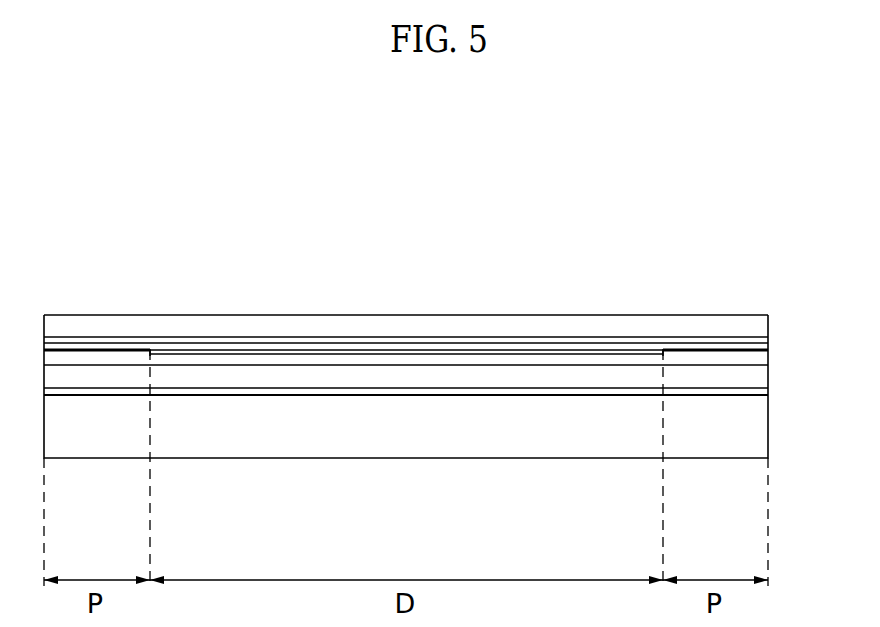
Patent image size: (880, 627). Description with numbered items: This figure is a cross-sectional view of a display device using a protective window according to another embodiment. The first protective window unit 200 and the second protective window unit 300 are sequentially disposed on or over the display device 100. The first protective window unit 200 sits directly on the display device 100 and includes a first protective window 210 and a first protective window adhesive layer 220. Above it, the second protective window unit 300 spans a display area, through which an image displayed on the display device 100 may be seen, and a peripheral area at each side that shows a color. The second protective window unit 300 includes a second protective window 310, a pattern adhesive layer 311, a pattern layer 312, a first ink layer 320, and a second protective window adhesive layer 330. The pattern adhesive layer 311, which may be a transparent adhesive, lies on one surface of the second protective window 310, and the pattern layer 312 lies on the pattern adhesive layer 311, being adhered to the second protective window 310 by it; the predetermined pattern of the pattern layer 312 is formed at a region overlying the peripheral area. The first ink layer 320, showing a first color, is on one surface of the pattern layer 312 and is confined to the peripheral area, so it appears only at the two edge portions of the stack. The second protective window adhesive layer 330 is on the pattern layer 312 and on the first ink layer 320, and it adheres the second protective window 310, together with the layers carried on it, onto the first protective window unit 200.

The display device 100 is at (767, 430).
The first protective window unit 200 is at (406, 463).
The first protective window 210 is at (490, 377).
The first protective window adhesive layer 220 is at (557, 390).
The second protective window unit 300 is at (406, 281).
The second protective window 310 is at (406, 304).
The pattern adhesive layer 311 is at (400, 338).
The pattern layer 312 is at (502, 347).
The first ink layer 320 is at (734, 263).
The second protective window adhesive layer 330 is at (568, 355).